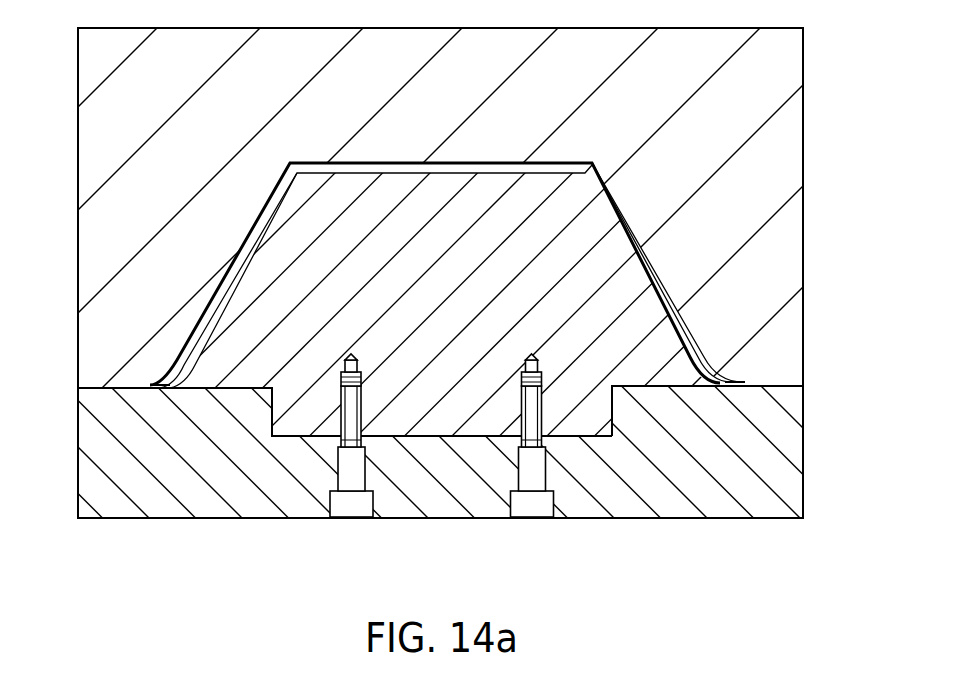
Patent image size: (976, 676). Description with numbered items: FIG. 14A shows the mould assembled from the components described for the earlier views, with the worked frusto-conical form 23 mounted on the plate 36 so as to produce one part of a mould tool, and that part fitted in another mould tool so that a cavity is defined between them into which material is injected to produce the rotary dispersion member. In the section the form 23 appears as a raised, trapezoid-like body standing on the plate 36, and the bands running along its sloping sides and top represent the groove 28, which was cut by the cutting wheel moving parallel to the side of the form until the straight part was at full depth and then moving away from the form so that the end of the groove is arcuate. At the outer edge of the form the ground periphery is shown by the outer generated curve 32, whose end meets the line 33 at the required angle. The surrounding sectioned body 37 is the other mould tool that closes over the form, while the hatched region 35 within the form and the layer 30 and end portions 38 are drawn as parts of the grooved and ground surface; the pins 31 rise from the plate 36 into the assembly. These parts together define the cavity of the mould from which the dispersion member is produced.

The upper block 37 is at (785, 78).
The plate 36 is at (120, 423).
The line 33 is at (688, 392).
The boss core 35 is at (300, 255).
The groove 28 is at (616, 217).
The form 23 is at (604, 260).
The intermediate layer 30 is at (703, 370).
The outer generated curve 32 is at (713, 373).
The layer end portion 38 is at (150, 384).
The pin 31 is at (616, 518).